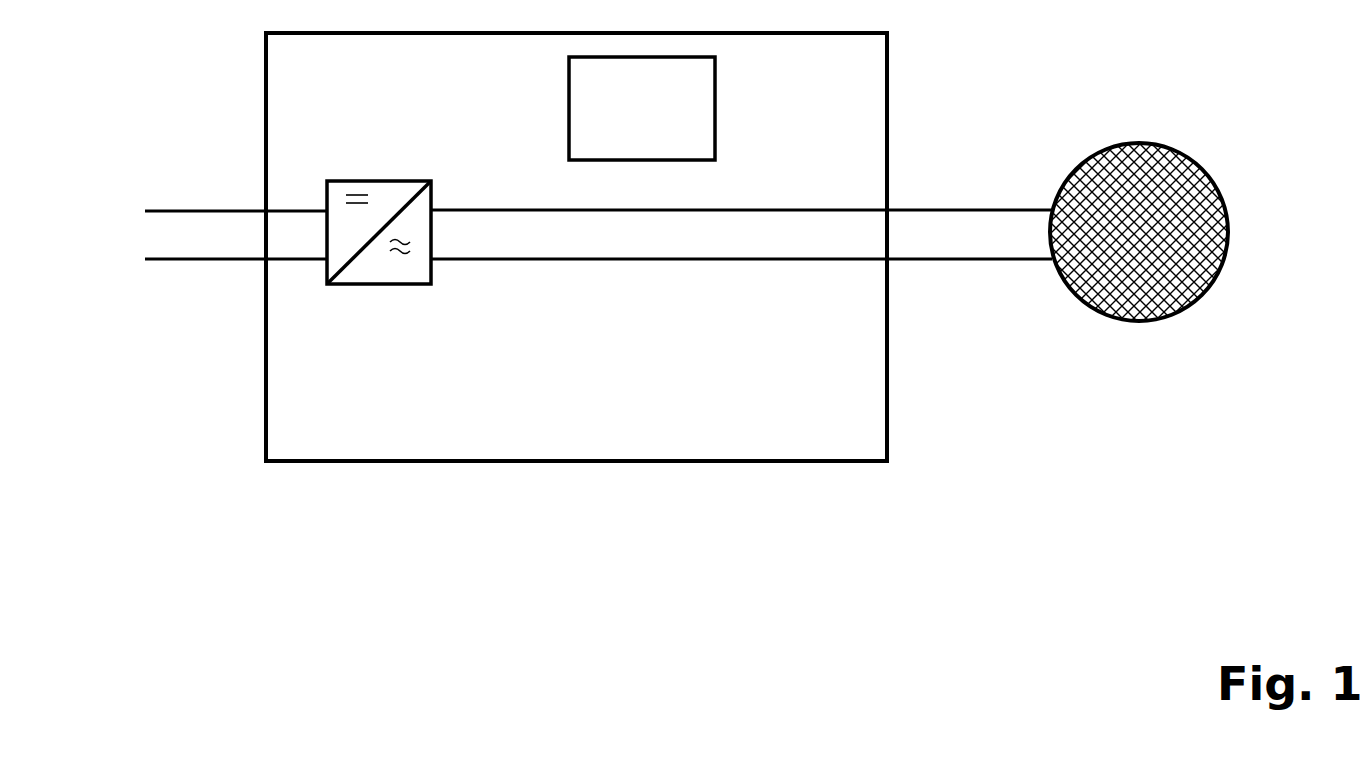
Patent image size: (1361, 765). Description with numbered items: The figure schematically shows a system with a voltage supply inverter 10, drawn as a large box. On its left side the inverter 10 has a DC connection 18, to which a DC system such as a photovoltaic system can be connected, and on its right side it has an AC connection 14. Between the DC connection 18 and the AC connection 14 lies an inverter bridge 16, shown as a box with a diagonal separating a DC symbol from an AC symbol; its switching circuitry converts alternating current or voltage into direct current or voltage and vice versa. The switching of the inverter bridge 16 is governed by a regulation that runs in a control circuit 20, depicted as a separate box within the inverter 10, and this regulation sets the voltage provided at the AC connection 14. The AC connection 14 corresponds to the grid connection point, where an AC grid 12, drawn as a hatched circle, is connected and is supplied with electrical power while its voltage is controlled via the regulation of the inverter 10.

The voltage supply inverter 10 is at (865, 74).
The AC grid 12 is at (1108, 143).
The AC connection 14 is at (888, 208).
The inverter bridge 16 is at (415, 285).
The DC connection 18 is at (265, 208).
The control circuit 20 is at (615, 124).